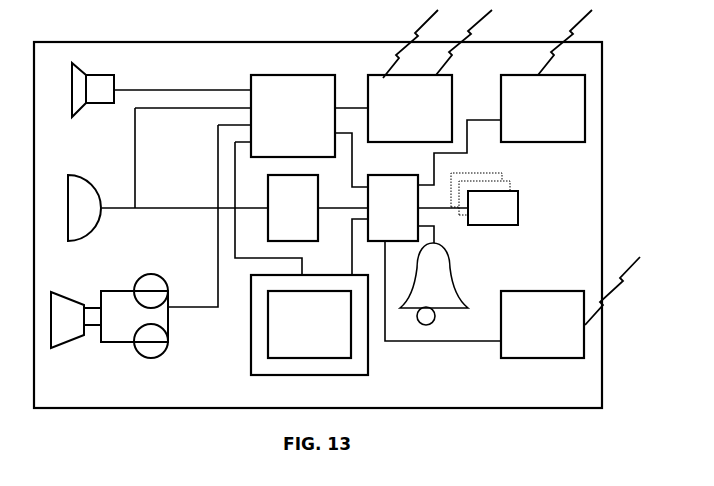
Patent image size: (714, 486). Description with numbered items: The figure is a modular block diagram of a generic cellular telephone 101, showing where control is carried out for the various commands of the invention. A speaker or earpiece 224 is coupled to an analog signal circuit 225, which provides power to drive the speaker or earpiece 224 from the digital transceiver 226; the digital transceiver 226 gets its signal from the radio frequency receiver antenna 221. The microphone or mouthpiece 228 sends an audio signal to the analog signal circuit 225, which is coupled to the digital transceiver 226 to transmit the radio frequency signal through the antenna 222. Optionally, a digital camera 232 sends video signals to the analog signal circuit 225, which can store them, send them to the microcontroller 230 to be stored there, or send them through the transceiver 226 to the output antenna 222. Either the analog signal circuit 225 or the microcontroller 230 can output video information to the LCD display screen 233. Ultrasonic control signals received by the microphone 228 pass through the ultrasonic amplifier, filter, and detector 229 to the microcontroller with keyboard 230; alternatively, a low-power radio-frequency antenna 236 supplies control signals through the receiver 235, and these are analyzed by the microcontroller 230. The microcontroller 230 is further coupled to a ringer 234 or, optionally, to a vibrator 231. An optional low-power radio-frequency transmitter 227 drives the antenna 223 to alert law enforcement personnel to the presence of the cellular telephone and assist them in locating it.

The generic cellular telephone 101 is at (317, 213).
The radio frequency receiver antenna 221 is at (410, 44).
The antenna 222 is at (485, 42).
The antenna 223 is at (586, 42).
The speaker or earpiece 224 is at (95, 100).
The analog signal circuit 225 is at (293, 116).
The digital transceiver 226 is at (410, 108).
The low-power radio-frequency transmitter 227 is at (543, 108).
The microphone or mouthpiece 228 is at (110, 208).
The ultrasonic amplifier, filter, and detector 229 is at (293, 208).
The microcontroller with keyboard 230 is at (393, 208).
The vibrator 231 is at (484, 199).
The digital camera 232 is at (109, 322).
The LCD display screen 233 is at (309, 325).
The ringer 234 is at (434, 284).
The receiver 235 is at (542, 324).
The low-power radio-frequency antenna 236 is at (618, 291).